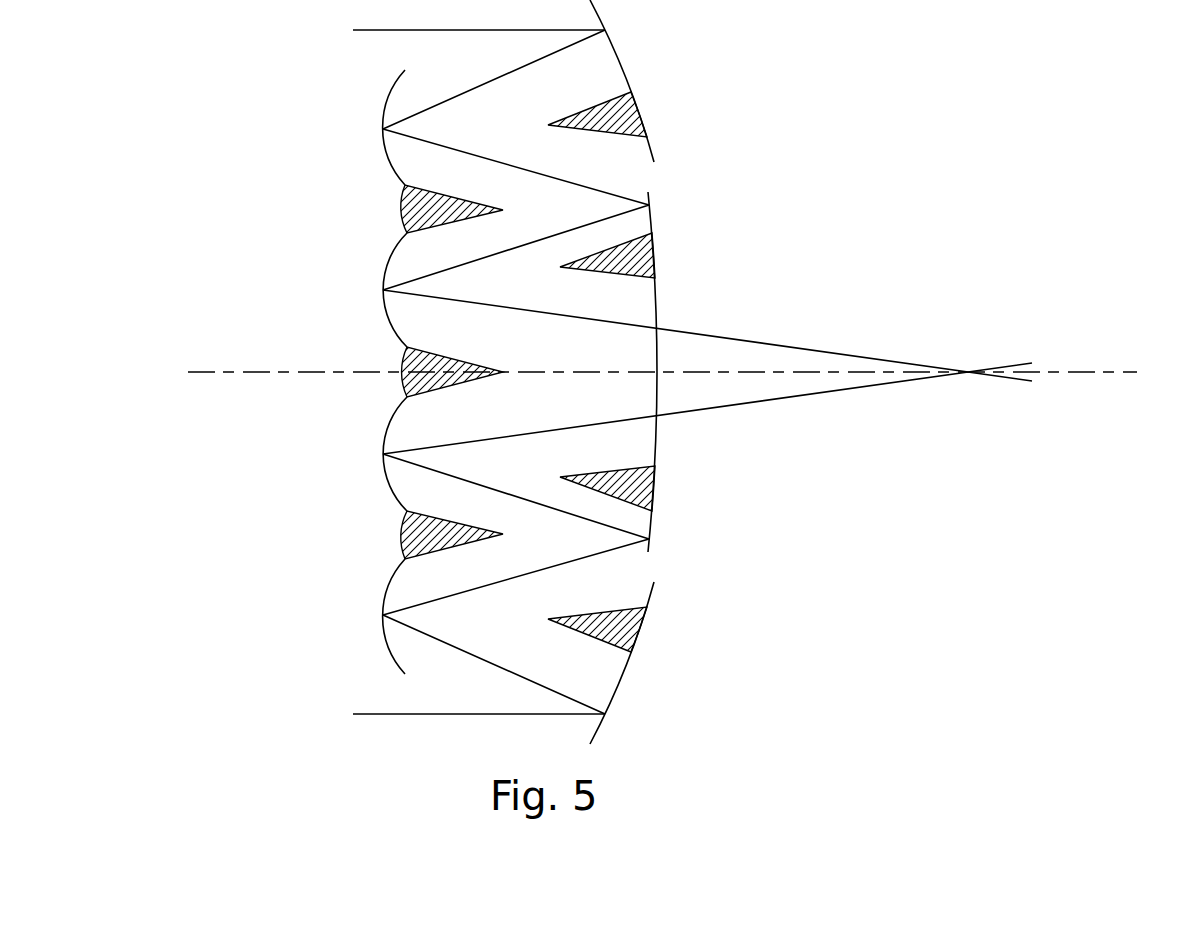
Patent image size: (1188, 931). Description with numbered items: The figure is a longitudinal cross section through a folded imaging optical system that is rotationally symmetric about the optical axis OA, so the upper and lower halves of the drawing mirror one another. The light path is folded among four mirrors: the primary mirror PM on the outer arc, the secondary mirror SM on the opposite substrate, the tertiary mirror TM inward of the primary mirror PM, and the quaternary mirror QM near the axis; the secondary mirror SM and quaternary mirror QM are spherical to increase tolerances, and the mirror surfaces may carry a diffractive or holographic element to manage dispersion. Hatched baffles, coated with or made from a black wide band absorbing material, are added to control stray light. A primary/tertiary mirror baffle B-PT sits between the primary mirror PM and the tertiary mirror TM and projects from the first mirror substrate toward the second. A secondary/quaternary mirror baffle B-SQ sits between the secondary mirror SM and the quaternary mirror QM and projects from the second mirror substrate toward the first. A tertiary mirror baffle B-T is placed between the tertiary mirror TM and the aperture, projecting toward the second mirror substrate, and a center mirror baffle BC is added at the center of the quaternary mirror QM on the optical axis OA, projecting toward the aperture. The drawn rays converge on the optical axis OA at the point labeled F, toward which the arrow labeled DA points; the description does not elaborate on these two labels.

The primary mirror PM is at (617, 57).
The secondary mirror SM is at (392, 103).
The tertiary mirror TM is at (650, 215).
The quaternary mirror QM is at (392, 298).
The primary/tertiary mirror baffle B-PT is at (645, 149).
The secondary/quaternary mirror baffle B-SQ is at (407, 243).
The tertiary mirror baffle B-T is at (657, 290).
The center mirror baffle BC is at (407, 344).
The optical axis OA is at (210, 372).
The focal point F is at (707, 372).
The detector arrangement DA is at (982, 350).